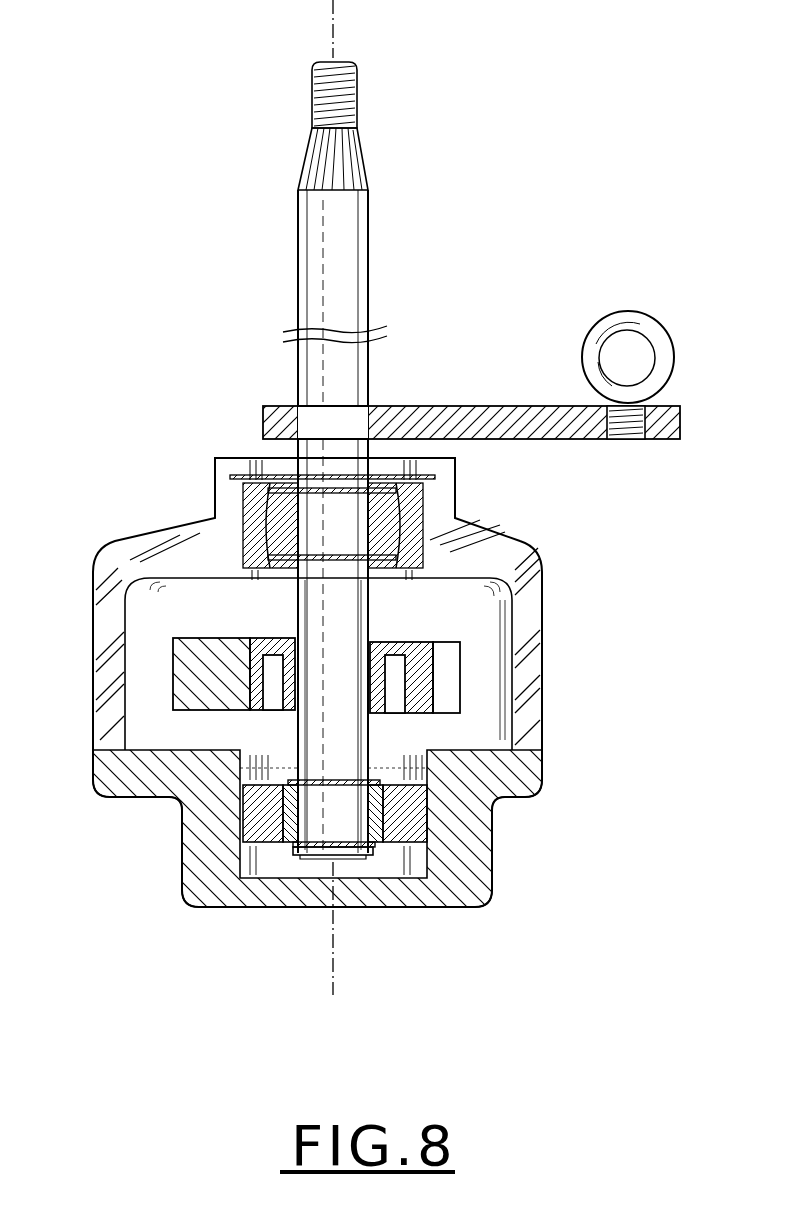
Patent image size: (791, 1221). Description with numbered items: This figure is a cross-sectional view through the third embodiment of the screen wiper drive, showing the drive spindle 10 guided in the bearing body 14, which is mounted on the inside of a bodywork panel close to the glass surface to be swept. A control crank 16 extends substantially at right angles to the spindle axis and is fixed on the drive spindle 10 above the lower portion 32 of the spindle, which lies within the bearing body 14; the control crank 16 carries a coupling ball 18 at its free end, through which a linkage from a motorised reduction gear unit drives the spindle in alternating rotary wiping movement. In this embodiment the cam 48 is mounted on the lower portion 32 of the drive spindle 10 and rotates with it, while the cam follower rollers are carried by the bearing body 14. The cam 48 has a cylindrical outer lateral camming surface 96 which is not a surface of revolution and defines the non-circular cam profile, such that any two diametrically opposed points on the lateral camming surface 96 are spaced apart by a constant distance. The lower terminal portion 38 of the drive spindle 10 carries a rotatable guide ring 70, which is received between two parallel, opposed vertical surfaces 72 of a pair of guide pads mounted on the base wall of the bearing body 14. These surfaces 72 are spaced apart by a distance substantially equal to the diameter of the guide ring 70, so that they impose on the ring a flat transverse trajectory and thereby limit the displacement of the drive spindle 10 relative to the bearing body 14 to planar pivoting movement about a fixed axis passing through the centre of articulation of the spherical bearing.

The drive spindle 10 is at (350, 263).
The bearing body 14 is at (550, 718).
The control crank 16 is at (525, 422).
The coupling ball 18 is at (655, 384).
The lower portion of the spindle 32 is at (344, 662).
The lower terminal portion of the spindle 38 is at (327, 823).
The cam 48 is at (405, 636).
The guide ring 70 is at (262, 816).
The vertical surfaces of the guide pads 72 is at (243, 858).
The lateral camming surface 96 is at (173, 667).